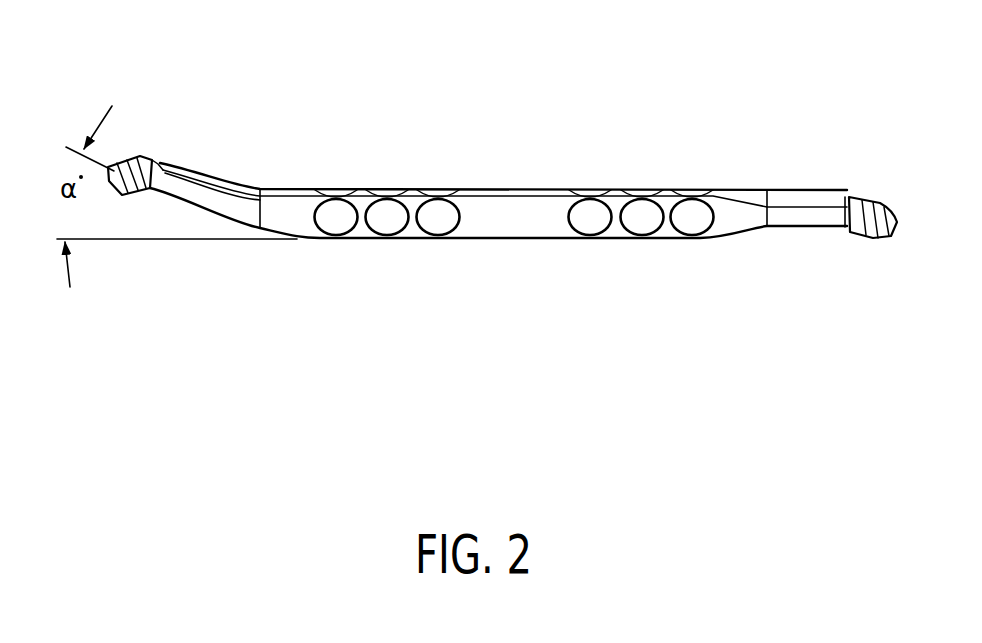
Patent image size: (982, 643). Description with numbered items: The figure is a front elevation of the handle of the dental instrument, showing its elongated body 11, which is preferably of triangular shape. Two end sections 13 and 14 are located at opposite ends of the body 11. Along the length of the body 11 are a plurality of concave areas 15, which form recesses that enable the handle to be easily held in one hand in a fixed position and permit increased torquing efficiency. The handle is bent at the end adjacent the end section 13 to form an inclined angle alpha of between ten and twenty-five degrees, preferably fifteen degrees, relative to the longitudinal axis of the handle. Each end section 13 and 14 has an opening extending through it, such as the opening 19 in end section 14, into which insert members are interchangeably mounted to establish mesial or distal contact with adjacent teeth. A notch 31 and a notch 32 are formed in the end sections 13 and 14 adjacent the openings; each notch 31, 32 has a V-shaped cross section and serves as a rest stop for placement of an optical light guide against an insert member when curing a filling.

The elongated body 11 is at (498, 284).
The end section 13 is at (167, 255).
The end section 14 is at (792, 297).
The concave areas 15 is at (337, 218).
The opening 19 is at (880, 124).
The notch 31 is at (196, 89).
The notch 32 is at (830, 142).